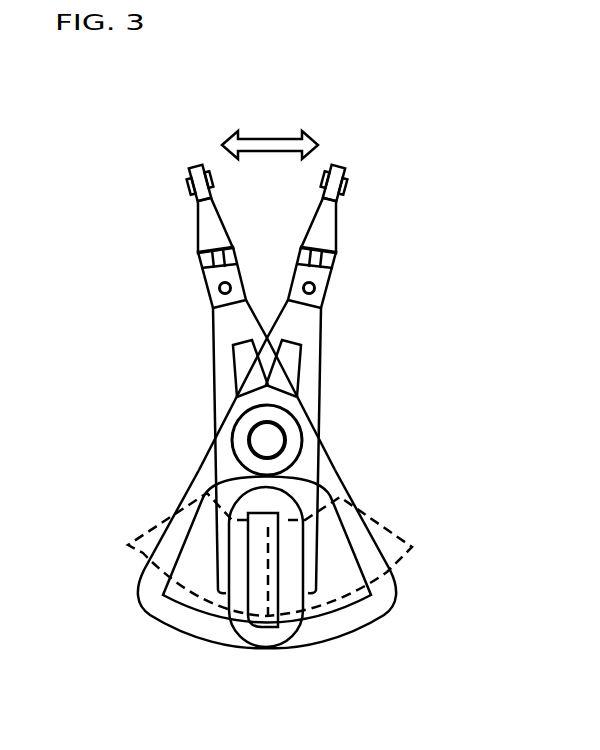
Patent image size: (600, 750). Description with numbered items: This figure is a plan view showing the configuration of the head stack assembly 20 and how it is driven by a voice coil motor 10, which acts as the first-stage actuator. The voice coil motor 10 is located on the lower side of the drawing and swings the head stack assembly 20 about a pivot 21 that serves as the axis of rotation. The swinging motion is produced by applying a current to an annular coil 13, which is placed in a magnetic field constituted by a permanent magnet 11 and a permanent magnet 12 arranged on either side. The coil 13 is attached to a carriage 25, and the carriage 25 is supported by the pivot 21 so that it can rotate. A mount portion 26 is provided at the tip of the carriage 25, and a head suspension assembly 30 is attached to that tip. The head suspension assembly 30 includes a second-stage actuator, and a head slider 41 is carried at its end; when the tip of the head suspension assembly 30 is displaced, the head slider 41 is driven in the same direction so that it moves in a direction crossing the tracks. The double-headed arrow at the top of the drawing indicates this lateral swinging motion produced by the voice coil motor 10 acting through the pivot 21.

The voice coil motor 10 is at (430, 659).
The permanent magnet 11 is at (398, 556).
The permanent magnet 12 is at (132, 550).
The annular coil 13 is at (325, 647).
The head stack assembly 20 is at (210, 89).
The pivot 21 is at (243, 437).
The carriage 25 is at (323, 372).
The mount portion 26 is at (338, 288).
The head suspension assembly 30 is at (384, 242).
The head slider 41 is at (355, 193).